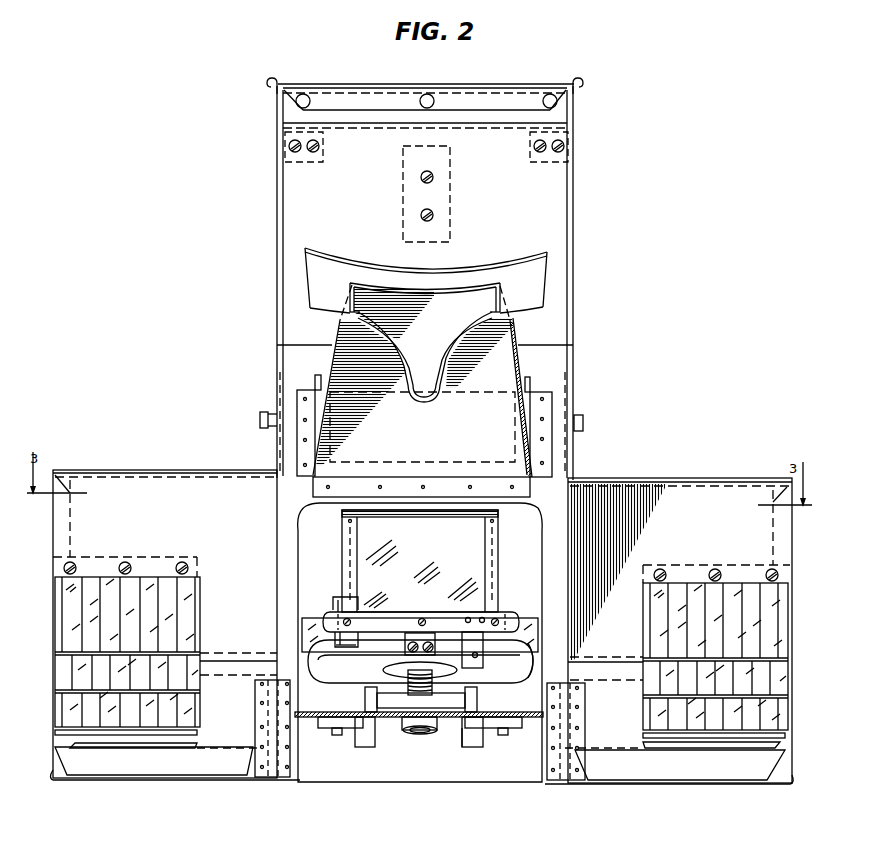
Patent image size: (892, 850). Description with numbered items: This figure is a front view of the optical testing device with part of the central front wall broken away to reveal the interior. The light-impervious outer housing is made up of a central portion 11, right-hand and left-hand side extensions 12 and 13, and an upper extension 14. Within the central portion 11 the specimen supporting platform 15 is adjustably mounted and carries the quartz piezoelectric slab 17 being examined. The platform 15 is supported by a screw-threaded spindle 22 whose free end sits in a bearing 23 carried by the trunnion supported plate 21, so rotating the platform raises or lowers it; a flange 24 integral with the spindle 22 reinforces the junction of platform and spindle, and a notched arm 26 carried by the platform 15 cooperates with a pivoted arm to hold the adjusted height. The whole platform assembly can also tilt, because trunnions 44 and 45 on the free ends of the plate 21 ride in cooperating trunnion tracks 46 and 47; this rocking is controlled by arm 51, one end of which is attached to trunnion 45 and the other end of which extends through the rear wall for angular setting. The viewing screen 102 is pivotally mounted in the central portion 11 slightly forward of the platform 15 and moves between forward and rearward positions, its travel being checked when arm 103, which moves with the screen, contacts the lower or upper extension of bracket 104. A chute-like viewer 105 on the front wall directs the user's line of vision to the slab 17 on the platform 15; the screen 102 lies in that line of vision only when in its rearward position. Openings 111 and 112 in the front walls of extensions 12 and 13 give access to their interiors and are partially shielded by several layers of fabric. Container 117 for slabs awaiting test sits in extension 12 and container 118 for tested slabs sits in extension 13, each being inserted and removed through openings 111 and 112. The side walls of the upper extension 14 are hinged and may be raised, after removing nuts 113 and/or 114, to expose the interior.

The central portion 11 is at (557, 499).
The right-hand side extension 12 is at (655, 482).
The left-hand side extension 13 is at (135, 483).
The upper extension 14 is at (558, 209).
The specimen supporting platform 15 is at (527, 676).
The quartz piezoelectric slab 17 is at (526, 628).
The trunnion supported plate 21 is at (390, 712).
The screw-threaded spindle 22 is at (403, 684).
The bearing 23 is at (413, 734).
The flange 24 is at (480, 658).
The arm 26 is at (437, 643).
The trunnion 44 is at (365, 692).
The trunnion 45 is at (473, 697).
The trunnion track 46 is at (363, 745).
The trunnion track 47 is at (477, 745).
The arm 51 is at (462, 738).
The viewing screen 102 is at (480, 569).
The arm 103 is at (356, 645).
The bracket 104 is at (336, 607).
The chute-like viewer 105 is at (500, 364).
The opening 111 is at (770, 737).
The opening 112 is at (70, 733).
The nut 113 is at (584, 421).
The nut 114 is at (262, 418).
The container 117 is at (685, 772).
The container 118 is at (145, 767).